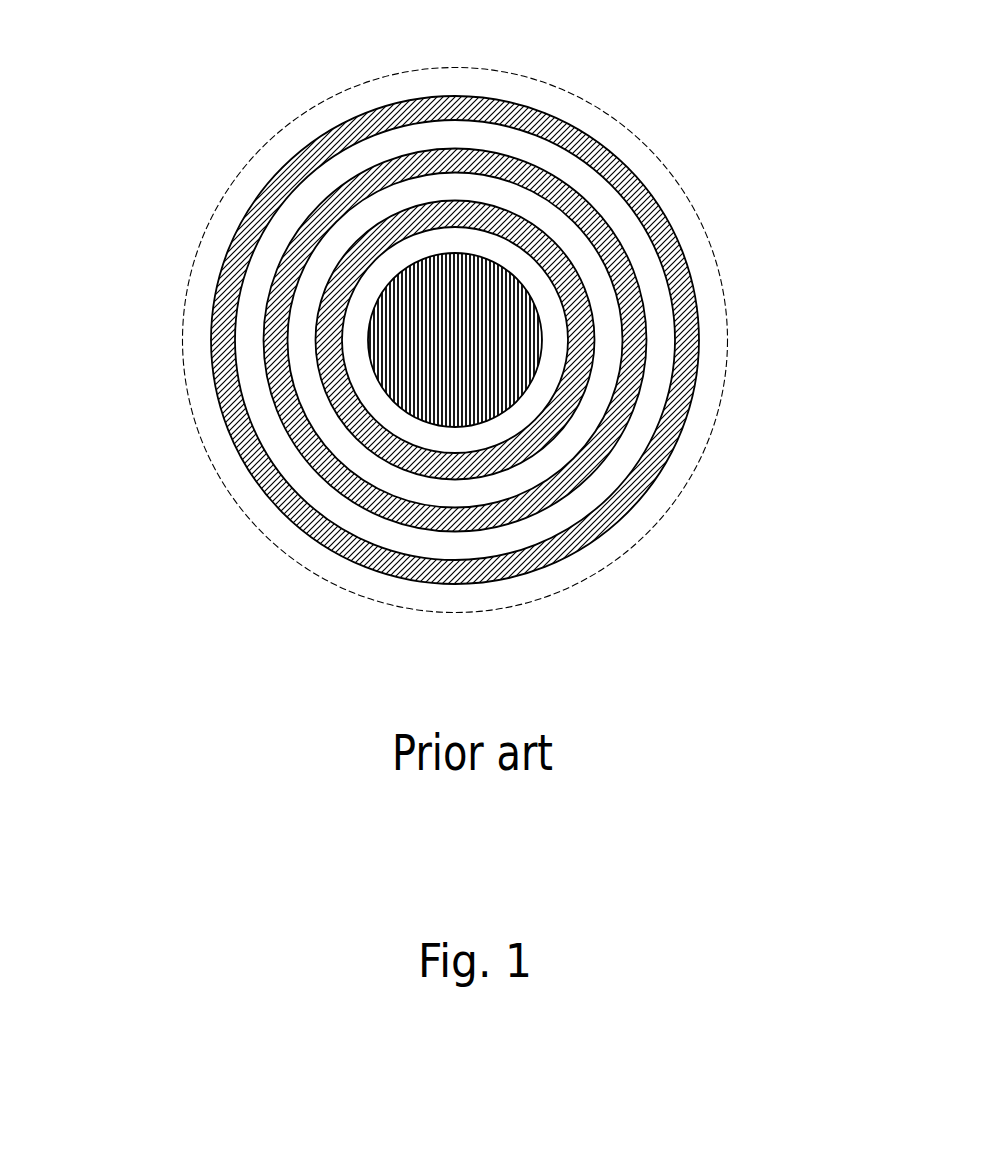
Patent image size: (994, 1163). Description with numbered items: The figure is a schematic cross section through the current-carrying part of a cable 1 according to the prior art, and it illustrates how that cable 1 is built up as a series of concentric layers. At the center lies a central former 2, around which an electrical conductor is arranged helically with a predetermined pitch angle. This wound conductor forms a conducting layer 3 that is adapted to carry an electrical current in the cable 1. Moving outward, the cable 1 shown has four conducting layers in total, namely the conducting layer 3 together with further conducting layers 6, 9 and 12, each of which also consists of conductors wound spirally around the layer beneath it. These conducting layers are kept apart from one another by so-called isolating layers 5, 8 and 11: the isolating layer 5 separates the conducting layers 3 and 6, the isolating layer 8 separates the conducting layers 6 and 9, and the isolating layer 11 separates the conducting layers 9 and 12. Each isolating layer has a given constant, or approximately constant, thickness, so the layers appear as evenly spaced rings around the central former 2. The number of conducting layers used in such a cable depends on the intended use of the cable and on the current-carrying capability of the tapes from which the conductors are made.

The cable 1 is at (469, 314).
The central former 2 is at (478, 348).
The conducting layer 3 is at (555, 337).
The isolating layer 5 is at (590, 310).
The conducting layer 6 is at (595, 270).
The isolating layer 8 is at (288, 258).
The conducting layer 9 is at (248, 323).
The isolating layer 11 is at (237, 444).
The conducting layer 12 is at (297, 541).